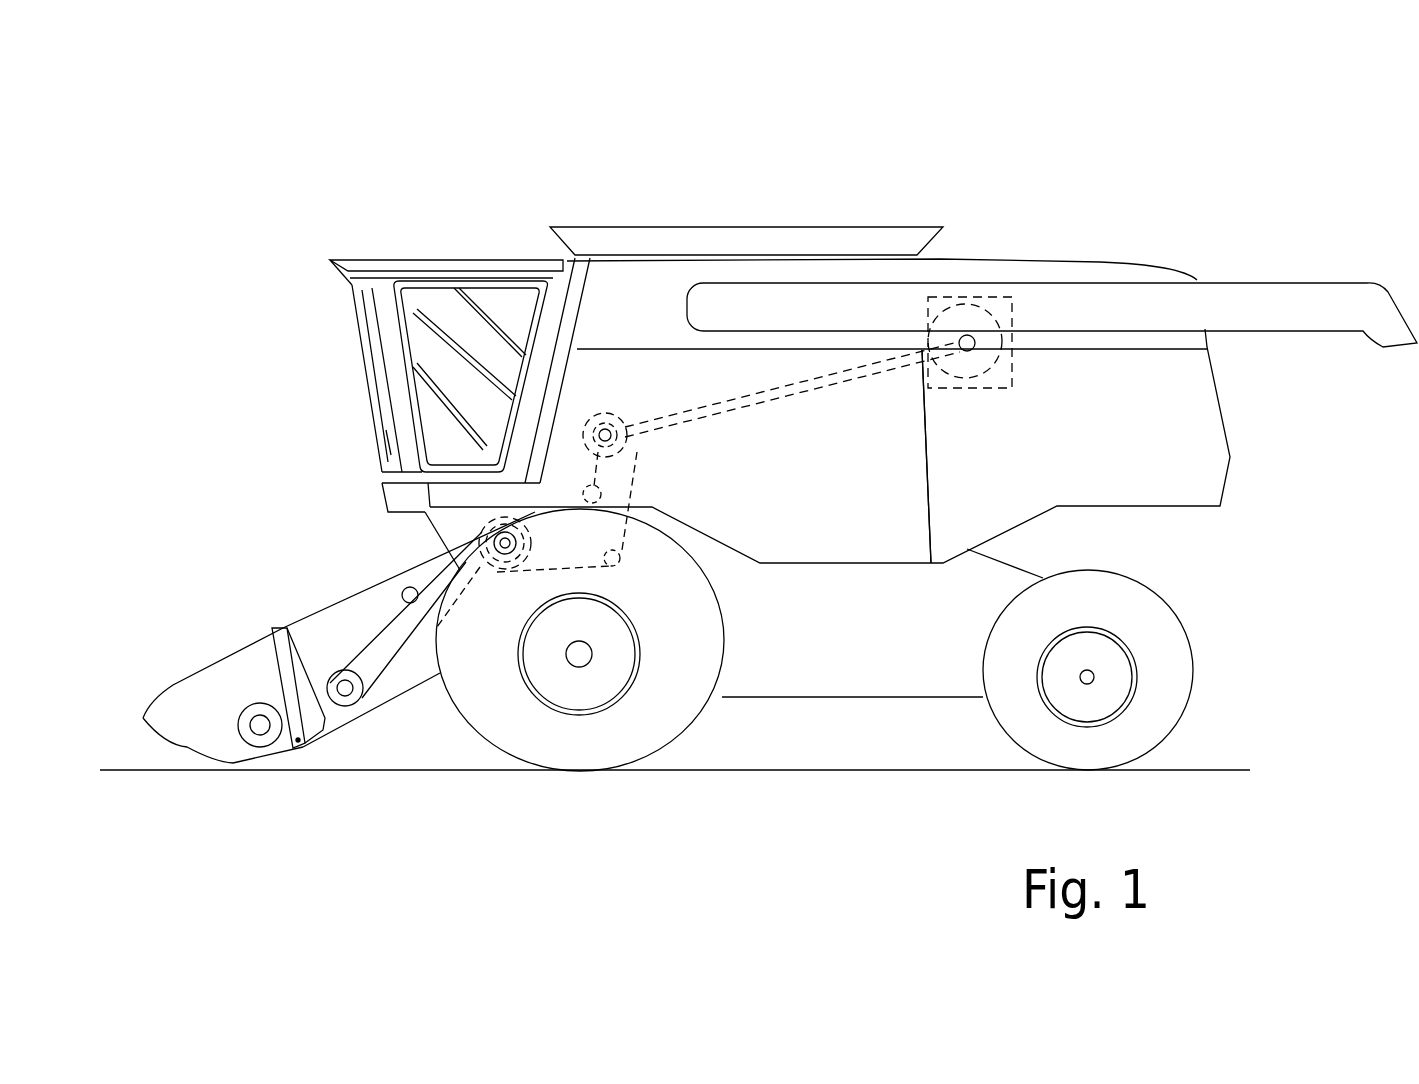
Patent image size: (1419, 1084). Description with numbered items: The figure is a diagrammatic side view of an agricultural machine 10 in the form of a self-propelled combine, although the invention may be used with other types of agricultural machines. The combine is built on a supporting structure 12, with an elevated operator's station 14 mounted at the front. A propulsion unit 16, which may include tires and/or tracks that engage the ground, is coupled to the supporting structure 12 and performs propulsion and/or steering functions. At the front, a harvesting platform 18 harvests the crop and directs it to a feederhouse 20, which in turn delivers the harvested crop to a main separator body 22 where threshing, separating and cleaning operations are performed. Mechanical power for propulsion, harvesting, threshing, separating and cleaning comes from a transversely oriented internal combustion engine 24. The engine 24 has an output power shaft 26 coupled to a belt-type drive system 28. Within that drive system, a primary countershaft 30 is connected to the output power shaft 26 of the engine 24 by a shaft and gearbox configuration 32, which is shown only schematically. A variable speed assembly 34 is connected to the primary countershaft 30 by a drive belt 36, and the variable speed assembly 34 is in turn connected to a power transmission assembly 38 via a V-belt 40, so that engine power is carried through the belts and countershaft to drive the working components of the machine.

The agricultural machine 10 is at (377, 163).
The supporting structure 12 is at (836, 644).
The operator's station 14 is at (492, 353).
The propulsion unit 16 is at (720, 738).
The harvesting platform 18 is at (210, 667).
The feederhouse 20 is at (340, 600).
The main separator body 22 is at (803, 495).
The internal combustion engine 24 is at (1005, 388).
The output power shaft 26 is at (967, 337).
The belt-type drive system 28 is at (682, 383).
The primary countershaft 30 is at (612, 430).
The shaft and gearbox configuration 32 is at (875, 357).
The variable speed assembly 34 is at (574, 531).
The drive belt 36 is at (640, 483).
The power transmission assembly 38 is at (323, 652).
The V-belt 40 is at (397, 673).